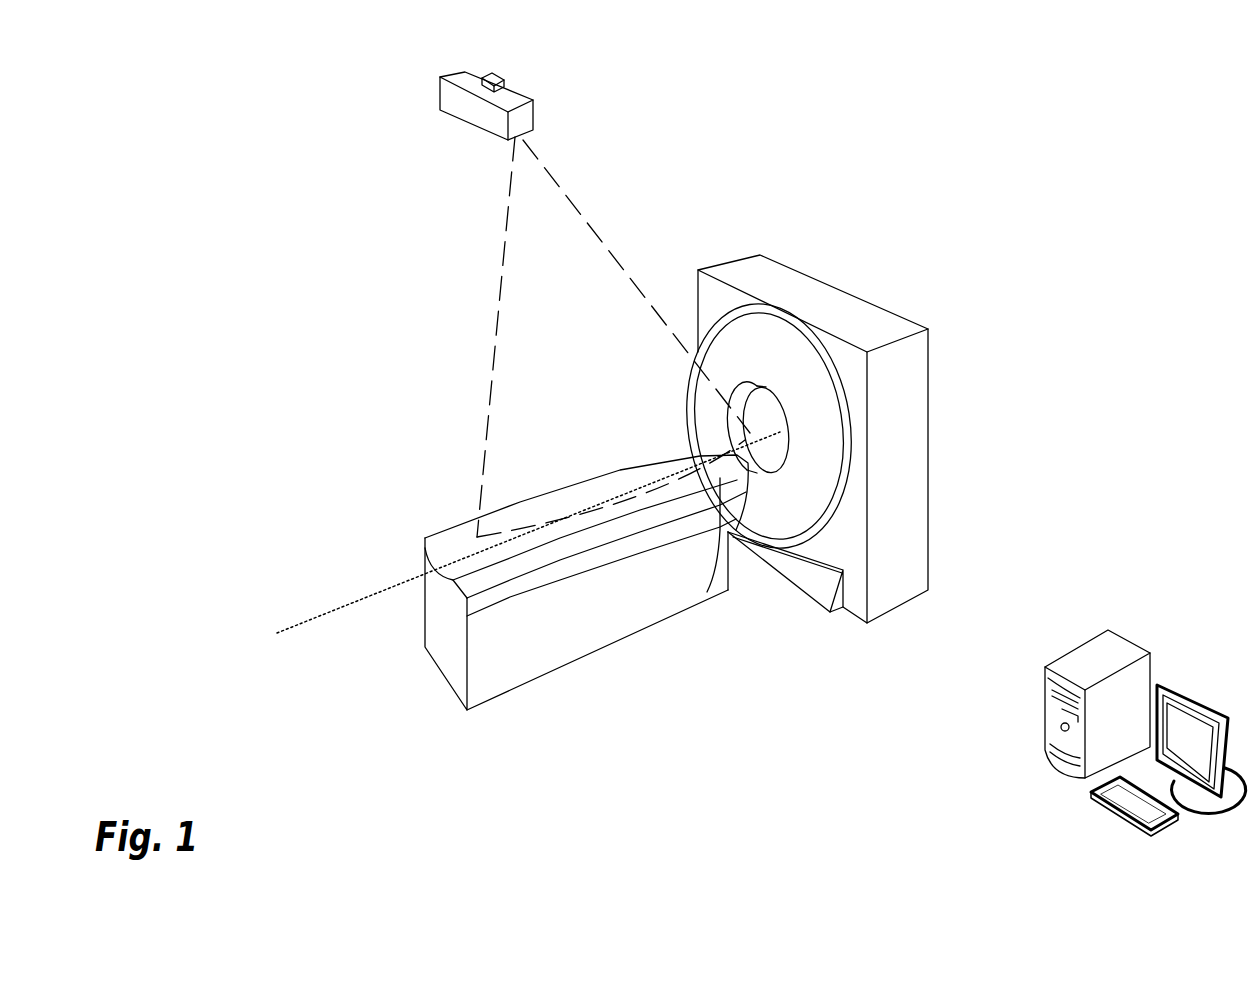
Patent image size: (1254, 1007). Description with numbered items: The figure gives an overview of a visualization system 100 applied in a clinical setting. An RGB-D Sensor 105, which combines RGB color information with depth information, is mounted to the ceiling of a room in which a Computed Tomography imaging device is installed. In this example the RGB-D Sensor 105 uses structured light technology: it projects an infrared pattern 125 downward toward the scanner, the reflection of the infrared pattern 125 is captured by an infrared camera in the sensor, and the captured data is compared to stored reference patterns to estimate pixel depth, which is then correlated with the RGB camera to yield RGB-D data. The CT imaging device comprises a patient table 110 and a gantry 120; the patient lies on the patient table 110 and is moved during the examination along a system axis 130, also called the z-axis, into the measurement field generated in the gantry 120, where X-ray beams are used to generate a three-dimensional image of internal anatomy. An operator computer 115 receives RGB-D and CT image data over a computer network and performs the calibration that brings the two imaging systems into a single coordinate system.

The visualization system 100 is at (1132, 127).
The RGB-D Sensor 105 is at (440, 92).
The patient table 110 is at (452, 686).
The operator computer 115 is at (1045, 667).
The gantry 120 is at (812, 277).
The infrared pattern 125 is at (607, 233).
The system axis 130 is at (330, 612).